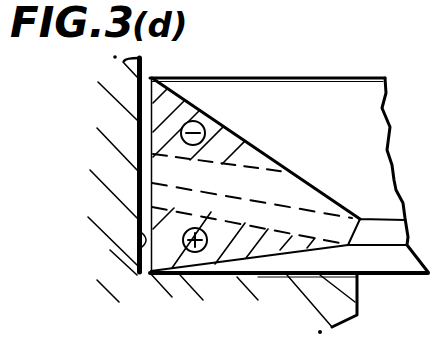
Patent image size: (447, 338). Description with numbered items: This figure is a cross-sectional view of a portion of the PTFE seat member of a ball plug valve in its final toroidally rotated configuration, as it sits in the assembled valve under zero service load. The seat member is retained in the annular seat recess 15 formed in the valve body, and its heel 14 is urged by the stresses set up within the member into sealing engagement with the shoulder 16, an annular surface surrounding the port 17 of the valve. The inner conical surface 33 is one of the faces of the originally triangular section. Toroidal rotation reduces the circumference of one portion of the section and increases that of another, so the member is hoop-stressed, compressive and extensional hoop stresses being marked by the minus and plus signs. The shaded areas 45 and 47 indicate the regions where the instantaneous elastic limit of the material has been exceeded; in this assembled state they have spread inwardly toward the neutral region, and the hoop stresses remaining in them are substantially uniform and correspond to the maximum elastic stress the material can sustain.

The heel 14 is at (149, 273).
The annular seat recess 15 is at (138, 268).
The shoulder 16 is at (285, 276).
The port 17 is at (358, 292).
The inner conical surface 33 is at (262, 277).
The shaded area of the section 45 is at (176, 100).
The shaded area of the section 47 is at (162, 234).